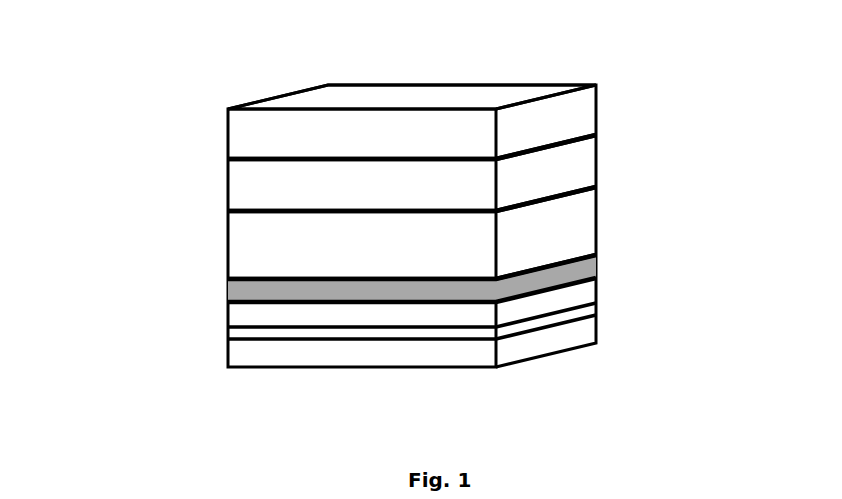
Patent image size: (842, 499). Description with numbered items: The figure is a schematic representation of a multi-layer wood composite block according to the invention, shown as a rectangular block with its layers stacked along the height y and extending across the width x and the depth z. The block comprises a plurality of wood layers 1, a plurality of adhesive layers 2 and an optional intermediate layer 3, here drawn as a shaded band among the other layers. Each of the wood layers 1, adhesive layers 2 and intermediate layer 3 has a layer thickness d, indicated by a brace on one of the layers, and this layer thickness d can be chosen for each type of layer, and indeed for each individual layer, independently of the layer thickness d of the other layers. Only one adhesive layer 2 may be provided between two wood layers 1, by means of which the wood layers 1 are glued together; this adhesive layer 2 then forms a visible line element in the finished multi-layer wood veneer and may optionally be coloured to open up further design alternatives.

The wood layer 1 is at (610, 117).
The adhesive layer 2 is at (610, 187).
The intermediate layer 3 is at (610, 267).
The layer thickness d is at (228, 215).
The width x is at (325, 345).
The height y is at (325, 345).
The depth z is at (325, 345).